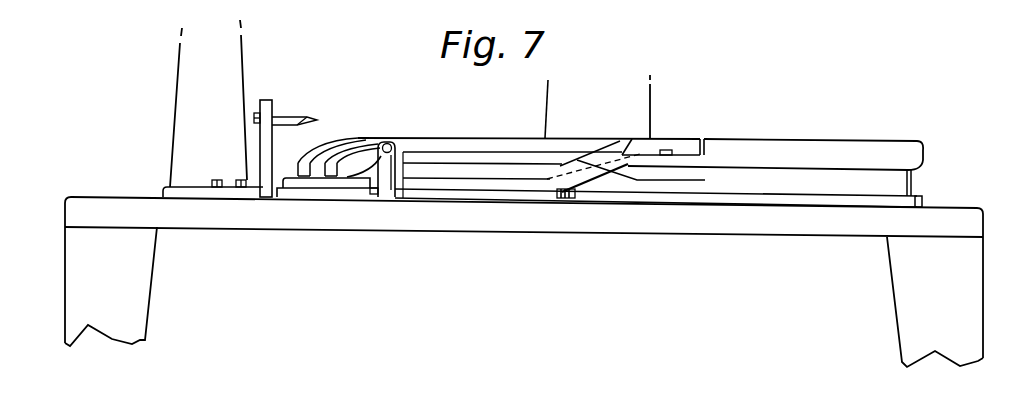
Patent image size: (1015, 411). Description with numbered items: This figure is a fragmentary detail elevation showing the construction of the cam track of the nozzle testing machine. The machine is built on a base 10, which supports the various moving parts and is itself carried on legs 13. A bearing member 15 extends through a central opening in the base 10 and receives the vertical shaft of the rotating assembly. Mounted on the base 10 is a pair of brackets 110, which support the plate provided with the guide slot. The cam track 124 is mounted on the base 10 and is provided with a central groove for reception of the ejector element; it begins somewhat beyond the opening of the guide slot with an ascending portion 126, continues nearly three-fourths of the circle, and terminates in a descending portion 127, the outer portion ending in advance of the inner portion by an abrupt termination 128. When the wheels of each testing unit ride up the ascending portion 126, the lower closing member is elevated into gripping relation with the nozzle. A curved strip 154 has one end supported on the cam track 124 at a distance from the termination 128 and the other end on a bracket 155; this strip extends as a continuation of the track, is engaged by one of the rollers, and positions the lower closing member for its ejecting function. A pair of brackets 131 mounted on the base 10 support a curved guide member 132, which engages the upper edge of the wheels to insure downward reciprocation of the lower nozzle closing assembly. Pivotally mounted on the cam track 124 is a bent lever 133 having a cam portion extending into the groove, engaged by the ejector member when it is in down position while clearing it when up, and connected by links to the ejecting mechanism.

The base 10 is at (756, 224).
The legs 13 is at (524, 297).
The bearing member 15 is at (637, 106).
The brackets 110 is at (186, 96).
The cam track 124 is at (921, 150).
The ascending portion 126 is at (347, 145).
The descending portion 127 is at (622, 173).
The abrupt termination 128 is at (707, 147).
The brackets 131 is at (272, 142).
The curved guide member 132 is at (291, 115).
The bent lever 133 is at (650, 150).
The curved strip 154 is at (478, 150).
The bracket 155 is at (389, 190).